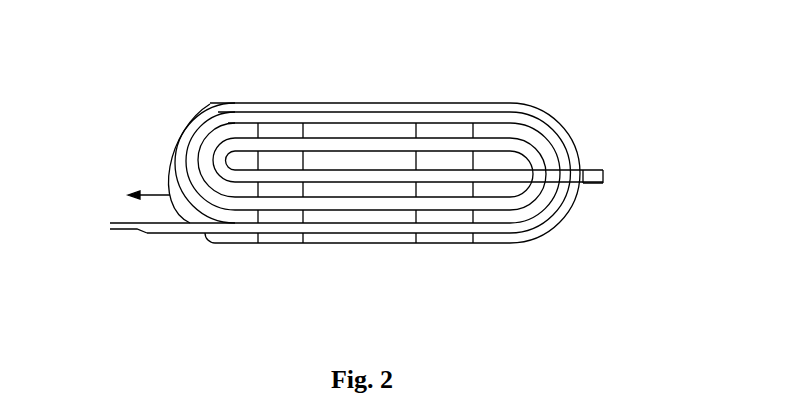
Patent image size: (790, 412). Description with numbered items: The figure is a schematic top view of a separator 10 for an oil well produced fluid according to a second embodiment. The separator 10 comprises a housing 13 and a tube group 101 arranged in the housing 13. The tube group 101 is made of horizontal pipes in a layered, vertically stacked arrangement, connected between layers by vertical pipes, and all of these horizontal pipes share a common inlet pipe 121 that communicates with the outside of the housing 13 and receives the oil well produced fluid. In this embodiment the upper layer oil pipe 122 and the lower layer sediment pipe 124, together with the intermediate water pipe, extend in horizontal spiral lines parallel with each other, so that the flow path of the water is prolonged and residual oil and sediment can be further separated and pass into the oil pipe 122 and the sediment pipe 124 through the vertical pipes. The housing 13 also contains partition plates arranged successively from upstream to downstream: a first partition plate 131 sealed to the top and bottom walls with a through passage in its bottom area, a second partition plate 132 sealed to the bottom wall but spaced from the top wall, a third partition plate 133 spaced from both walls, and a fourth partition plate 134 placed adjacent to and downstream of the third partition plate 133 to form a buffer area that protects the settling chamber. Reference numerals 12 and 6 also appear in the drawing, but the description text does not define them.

The separator 10 is at (483, 51).
The housing 13 is at (490, 95).
The tube group 101 is at (368, 115).
The first partition plate 131 is at (473, 106).
The second partition plate 132 is at (417, 106).
The third partition plate 133 is at (305, 110).
The fourth partition plate 134 is at (261, 111).
The inlet pipe 121 is at (574, 171).
The oil pipe 122 is at (599, 171).
The sediment pipe 124 is at (593, 176).
The outer lead 12 is at (140, 232).
The lead-out line 6 is at (142, 198).